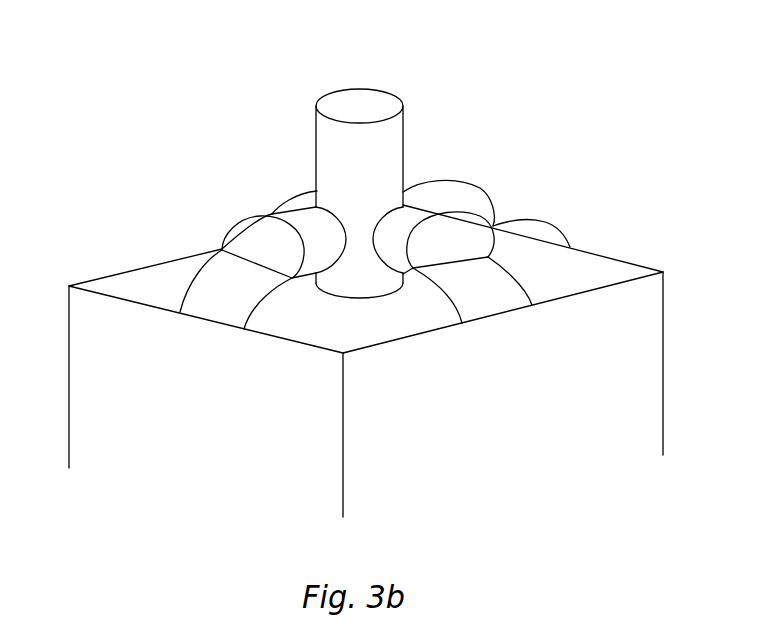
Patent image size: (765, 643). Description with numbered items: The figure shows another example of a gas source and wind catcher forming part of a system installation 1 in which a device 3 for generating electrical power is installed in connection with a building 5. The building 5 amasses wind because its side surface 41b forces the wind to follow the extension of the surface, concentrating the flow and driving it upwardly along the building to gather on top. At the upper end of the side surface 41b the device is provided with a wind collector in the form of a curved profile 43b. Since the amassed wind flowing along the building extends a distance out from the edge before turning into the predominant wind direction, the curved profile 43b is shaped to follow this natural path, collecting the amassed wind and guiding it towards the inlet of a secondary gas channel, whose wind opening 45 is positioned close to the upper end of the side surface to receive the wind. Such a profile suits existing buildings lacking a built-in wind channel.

The system installation 1 is at (237, 128).
The device 3 is at (385, 150).
The building 5 is at (588, 265).
The side surface 41b is at (203, 424).
The curved profile 43b is at (217, 282).
The wind opening 45 is at (253, 242).